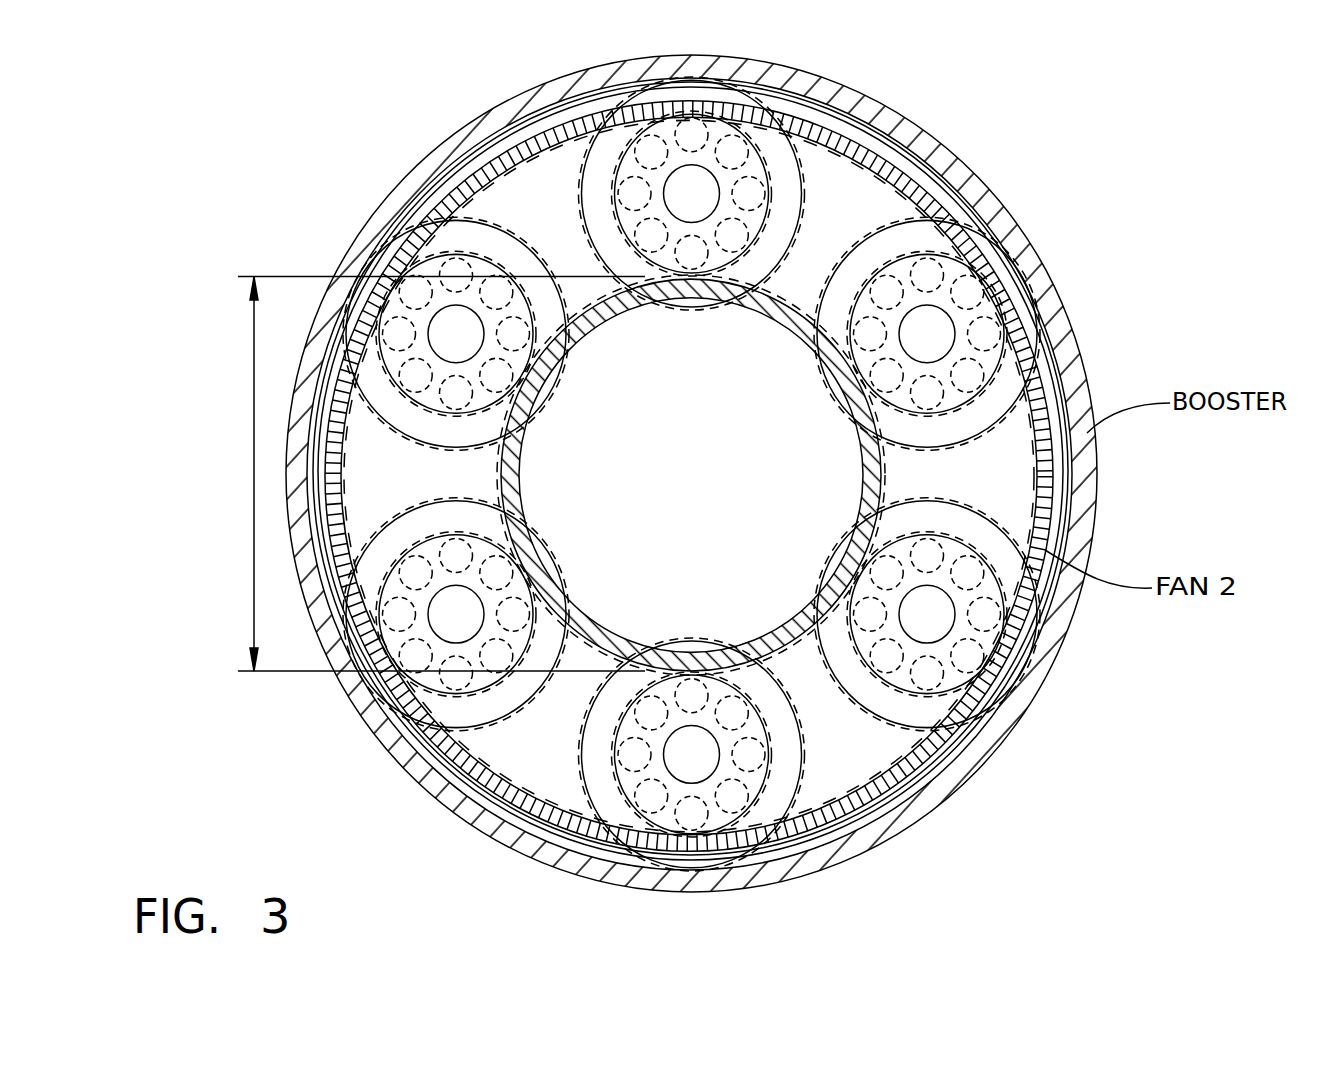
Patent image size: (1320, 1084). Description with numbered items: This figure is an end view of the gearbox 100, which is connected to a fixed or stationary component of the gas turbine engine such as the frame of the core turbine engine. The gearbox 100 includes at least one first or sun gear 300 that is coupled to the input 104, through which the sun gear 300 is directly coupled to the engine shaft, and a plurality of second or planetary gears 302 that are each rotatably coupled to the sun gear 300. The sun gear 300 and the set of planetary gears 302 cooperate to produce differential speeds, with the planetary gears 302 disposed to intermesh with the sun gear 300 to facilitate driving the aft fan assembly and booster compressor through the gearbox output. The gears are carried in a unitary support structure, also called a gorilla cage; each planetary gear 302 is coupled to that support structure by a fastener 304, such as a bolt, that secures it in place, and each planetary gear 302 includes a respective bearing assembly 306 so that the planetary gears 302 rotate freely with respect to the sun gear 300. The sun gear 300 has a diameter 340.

The gearbox 100 is at (1140, 122).
The input 104 is at (522, 453).
The sun gear 300 is at (594, 318).
The planetary gears 302 is at (921, 221).
The fastener 304 is at (931, 306).
The bearing assembly 306 is at (1004, 332).
The diameter 340 is at (254, 474).